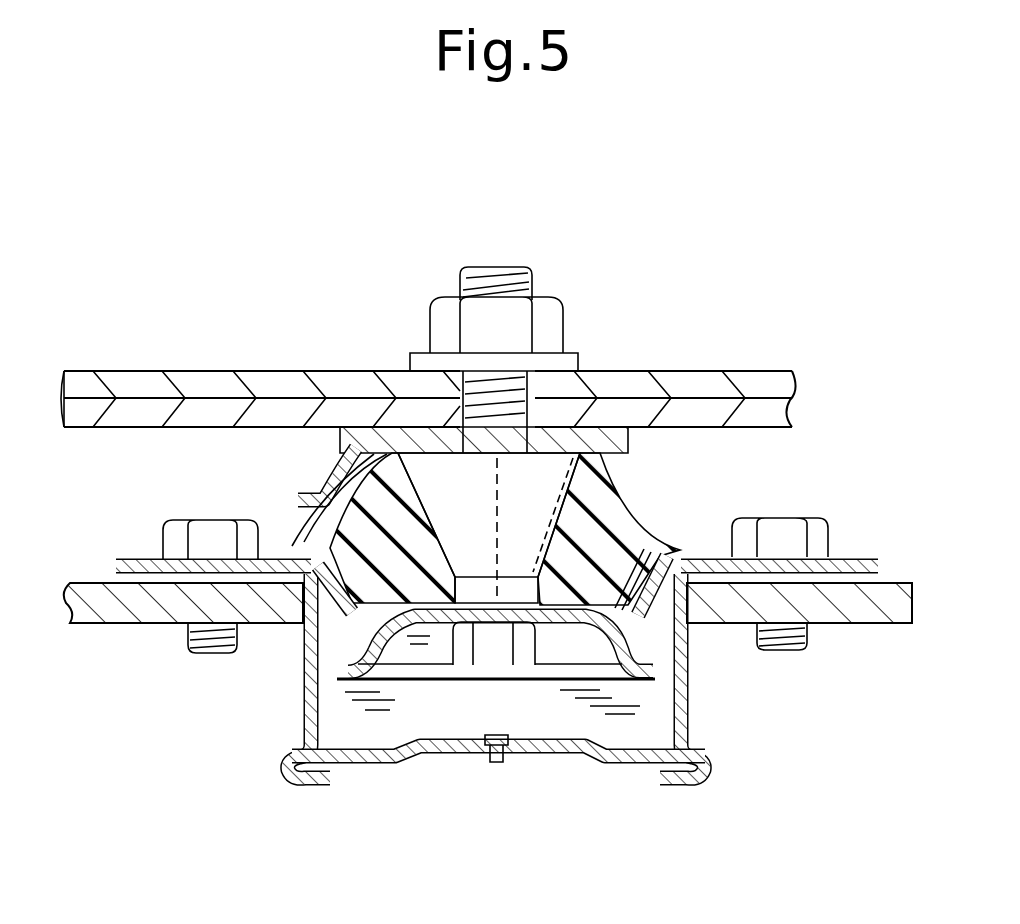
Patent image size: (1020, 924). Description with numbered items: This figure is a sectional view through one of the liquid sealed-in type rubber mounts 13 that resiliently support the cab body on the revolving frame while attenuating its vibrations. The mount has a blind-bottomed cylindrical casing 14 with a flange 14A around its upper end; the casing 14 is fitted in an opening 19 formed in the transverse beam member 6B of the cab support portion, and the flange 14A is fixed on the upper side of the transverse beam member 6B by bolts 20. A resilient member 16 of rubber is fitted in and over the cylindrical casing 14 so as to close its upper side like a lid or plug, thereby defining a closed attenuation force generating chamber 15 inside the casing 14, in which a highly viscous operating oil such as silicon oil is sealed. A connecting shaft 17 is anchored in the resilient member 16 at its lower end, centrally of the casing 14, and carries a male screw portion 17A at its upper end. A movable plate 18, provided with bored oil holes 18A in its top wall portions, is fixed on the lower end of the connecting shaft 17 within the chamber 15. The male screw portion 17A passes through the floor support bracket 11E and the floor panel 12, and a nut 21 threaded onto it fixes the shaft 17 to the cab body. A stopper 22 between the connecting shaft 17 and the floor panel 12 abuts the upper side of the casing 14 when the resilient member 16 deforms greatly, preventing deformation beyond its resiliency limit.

The transverse beam member 6B is at (890, 604).
The floor support bracket 11E is at (138, 383).
The floor panel 12 is at (122, 414).
The rubber mount 13 is at (355, 775).
The cylindrical casing 14 is at (690, 736).
The flange 14A is at (864, 556).
The attenuation force generating chamber 15 is at (548, 715).
The resilient member 16 is at (627, 527).
The connecting shaft 17 is at (536, 478).
The male screw portion 17A is at (498, 268).
The movable plate 18 is at (627, 656).
The oil hole 18A is at (425, 625).
The opening 19 is at (285, 600).
The bolt 20 is at (214, 530).
The nut 21 is at (553, 322).
The stopper 22 is at (336, 472).